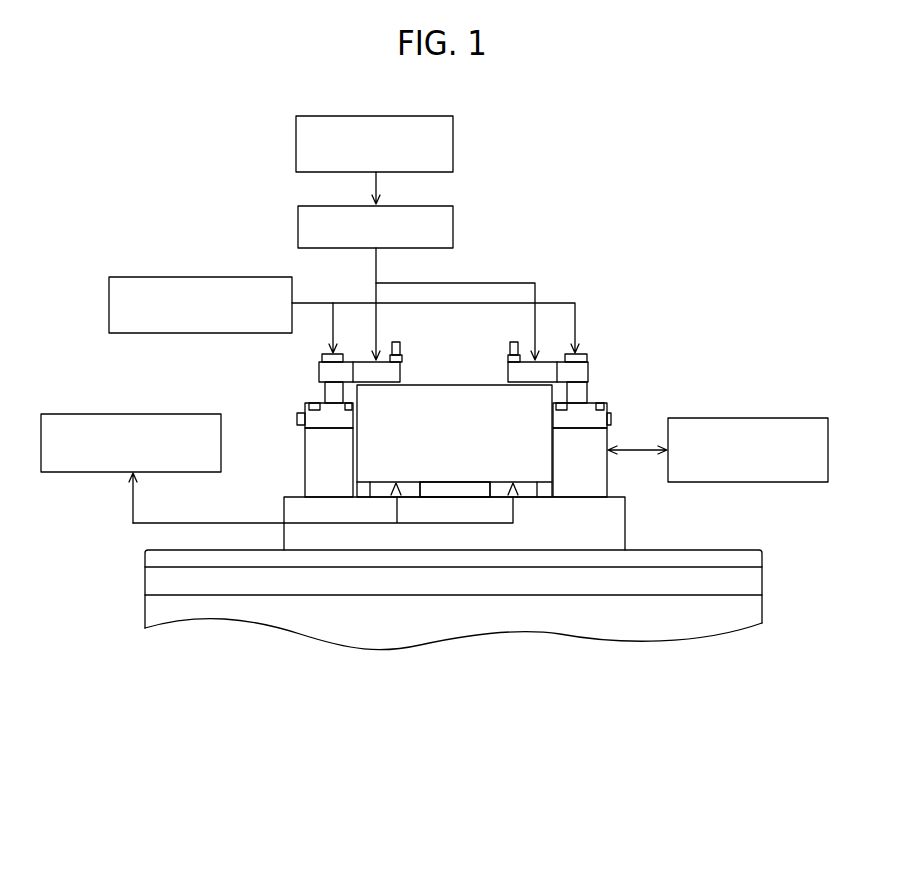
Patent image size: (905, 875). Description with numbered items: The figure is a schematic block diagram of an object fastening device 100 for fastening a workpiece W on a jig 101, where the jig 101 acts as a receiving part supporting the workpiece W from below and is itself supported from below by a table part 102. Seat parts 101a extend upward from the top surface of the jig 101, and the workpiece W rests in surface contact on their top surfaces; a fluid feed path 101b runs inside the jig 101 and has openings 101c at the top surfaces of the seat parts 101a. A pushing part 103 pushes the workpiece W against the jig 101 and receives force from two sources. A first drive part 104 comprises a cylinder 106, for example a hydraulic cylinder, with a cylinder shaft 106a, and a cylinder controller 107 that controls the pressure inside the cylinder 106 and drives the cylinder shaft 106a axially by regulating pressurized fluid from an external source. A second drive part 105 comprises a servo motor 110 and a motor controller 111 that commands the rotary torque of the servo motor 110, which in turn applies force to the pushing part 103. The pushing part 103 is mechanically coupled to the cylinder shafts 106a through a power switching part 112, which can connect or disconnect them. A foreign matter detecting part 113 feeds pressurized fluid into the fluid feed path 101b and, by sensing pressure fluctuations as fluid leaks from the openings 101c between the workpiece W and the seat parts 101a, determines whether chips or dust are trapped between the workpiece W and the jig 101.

The object fastening device 100 is at (640, 172).
The jig 101 is at (634, 521).
The seat parts 101a is at (498, 492).
The fluid feed path 101b is at (313, 523).
The openings 101c is at (396, 483).
The table part 102 is at (398, 625).
The pushing part 103 is at (395, 373).
The first drive part 104 is at (787, 332).
The second drive part 105 is at (295, 116).
The cylinder 106 is at (298, 460).
The cylinder shaft 106a is at (332, 390).
The cylinder controller 107 is at (735, 418).
The servo motor 110 is at (453, 226).
The motor controller 111 is at (453, 150).
The power switching part 112 is at (182, 277).
The foreign matter detecting part 113 is at (97, 414).
The workpiece W is at (485, 398).